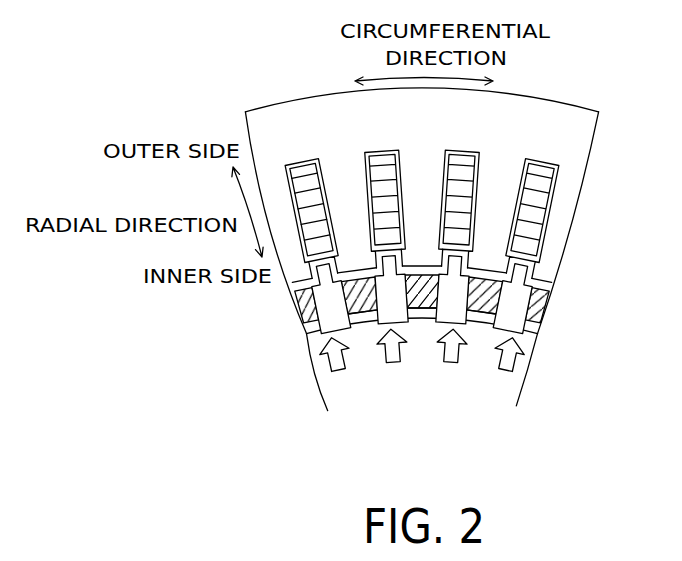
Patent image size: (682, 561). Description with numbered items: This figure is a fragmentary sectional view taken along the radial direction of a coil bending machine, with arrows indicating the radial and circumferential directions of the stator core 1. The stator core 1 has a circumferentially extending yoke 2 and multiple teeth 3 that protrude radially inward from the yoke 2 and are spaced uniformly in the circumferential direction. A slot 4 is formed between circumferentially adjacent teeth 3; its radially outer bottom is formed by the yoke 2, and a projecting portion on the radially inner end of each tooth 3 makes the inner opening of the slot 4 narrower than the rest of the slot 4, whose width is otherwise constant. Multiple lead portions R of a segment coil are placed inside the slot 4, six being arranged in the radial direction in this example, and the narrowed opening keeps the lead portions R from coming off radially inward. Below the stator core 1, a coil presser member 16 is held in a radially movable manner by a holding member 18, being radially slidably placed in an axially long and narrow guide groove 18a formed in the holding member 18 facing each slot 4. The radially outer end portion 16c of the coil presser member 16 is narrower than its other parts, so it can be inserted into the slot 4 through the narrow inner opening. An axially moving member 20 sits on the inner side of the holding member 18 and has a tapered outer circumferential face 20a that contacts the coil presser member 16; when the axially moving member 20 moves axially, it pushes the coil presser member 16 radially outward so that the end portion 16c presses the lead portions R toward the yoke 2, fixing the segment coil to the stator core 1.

The stator core 1 is at (553, 90).
The yoke 2 is at (297, 127).
The teeth 3 is at (350, 163).
The slot 4 is at (297, 163).
The lead portion R is at (315, 218).
The coil presser member 16 is at (520, 322).
The radially outer end portion 16c is at (557, 285).
The holding member 18 is at (545, 302).
The guide groove 18a is at (510, 305).
The axially moving member 20 is at (342, 388).
The outer circumferential face 20a is at (300, 327).